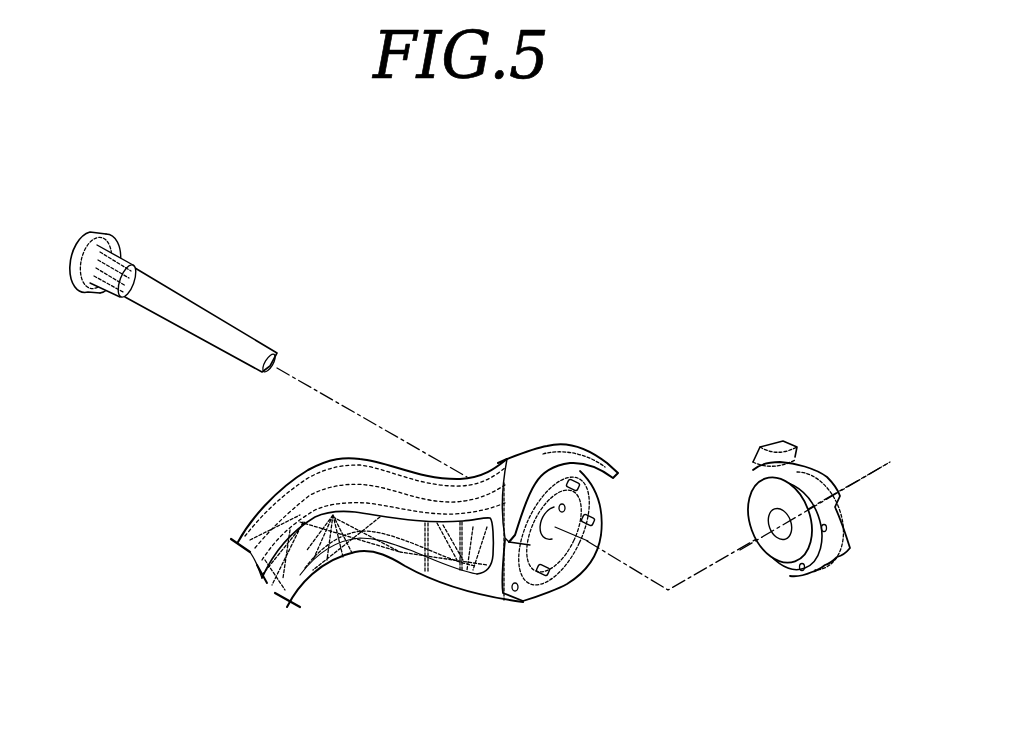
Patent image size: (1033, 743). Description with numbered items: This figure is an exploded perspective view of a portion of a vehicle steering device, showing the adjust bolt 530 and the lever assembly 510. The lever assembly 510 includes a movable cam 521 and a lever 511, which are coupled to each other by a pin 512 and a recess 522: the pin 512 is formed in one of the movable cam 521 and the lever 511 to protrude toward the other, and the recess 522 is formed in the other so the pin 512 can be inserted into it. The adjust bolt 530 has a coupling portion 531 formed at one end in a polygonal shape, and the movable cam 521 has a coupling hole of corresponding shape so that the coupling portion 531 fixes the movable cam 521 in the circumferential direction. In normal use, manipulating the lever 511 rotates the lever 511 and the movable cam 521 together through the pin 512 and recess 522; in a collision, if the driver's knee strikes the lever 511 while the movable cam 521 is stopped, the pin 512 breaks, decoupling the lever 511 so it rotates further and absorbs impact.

The lever assembly 510 is at (560, 430).
The lever 511 is at (568, 464).
The pin 512 is at (601, 505).
The movable cam 521 is at (793, 469).
The recess 522 is at (768, 460).
The adjust bolt 530 is at (156, 285).
The coupling portion 531 is at (126, 246).